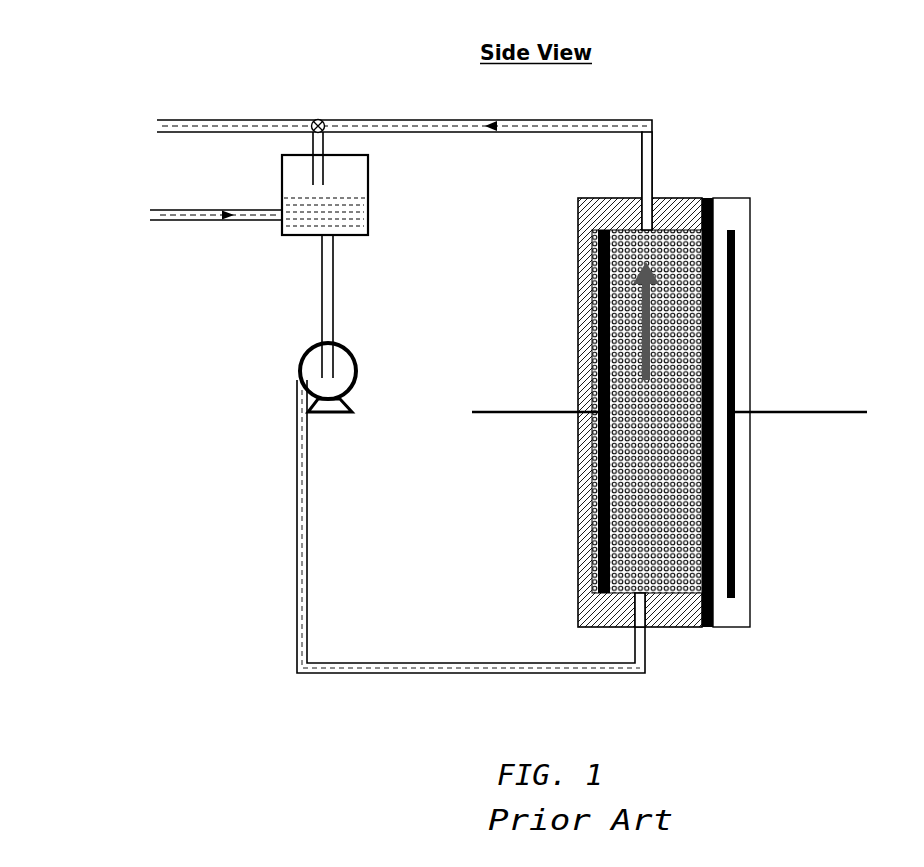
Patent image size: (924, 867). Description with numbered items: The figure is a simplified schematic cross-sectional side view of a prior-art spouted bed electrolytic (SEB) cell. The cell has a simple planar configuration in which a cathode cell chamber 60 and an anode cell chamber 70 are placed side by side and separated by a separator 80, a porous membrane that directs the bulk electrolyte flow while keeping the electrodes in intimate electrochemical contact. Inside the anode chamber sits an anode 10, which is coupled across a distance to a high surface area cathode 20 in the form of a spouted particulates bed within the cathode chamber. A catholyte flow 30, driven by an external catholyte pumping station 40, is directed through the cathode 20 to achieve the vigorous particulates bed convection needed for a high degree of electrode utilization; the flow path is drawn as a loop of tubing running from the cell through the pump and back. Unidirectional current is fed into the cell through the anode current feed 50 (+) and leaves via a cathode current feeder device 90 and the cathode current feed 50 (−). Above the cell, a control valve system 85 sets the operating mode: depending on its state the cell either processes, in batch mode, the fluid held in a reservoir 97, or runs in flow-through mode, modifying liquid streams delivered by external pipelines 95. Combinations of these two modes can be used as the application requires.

The anode 10 is at (735, 294).
The high surface area cathode 20 is at (604, 470).
The catholyte flow 30 is at (397, 652).
The external catholyte pumping station 40 is at (298, 370).
The anode current feed and cathode current feed 50 is at (477, 404).
The cathode cell chamber 60 is at (577, 595).
The anode cell chamber 70 is at (752, 608).
The separator (porous membrane) 80 is at (708, 628).
The control valve system 85 is at (318, 113).
The cathode current feeder device 90 is at (593, 520).
The external pipelines 95 is at (218, 134).
The reservoir 97 is at (370, 205).